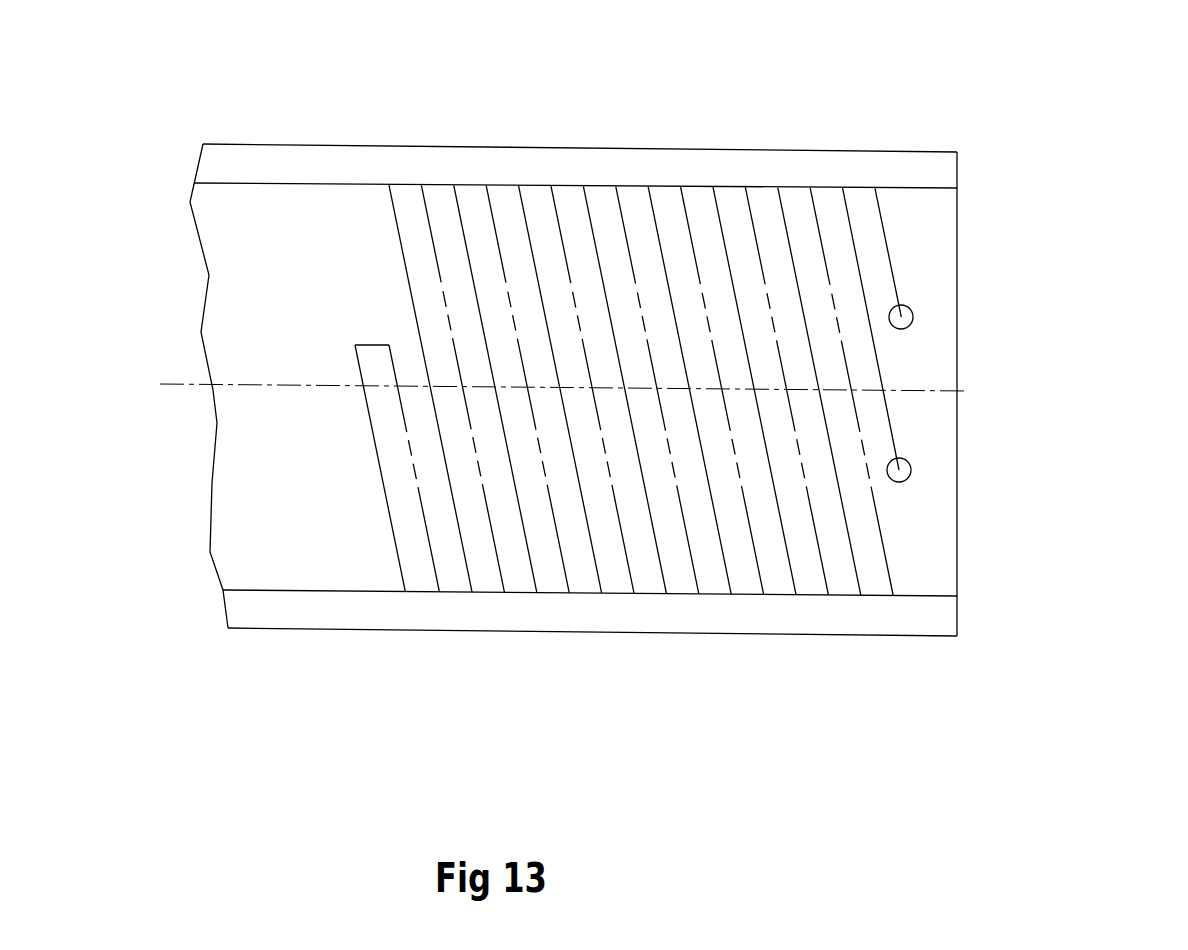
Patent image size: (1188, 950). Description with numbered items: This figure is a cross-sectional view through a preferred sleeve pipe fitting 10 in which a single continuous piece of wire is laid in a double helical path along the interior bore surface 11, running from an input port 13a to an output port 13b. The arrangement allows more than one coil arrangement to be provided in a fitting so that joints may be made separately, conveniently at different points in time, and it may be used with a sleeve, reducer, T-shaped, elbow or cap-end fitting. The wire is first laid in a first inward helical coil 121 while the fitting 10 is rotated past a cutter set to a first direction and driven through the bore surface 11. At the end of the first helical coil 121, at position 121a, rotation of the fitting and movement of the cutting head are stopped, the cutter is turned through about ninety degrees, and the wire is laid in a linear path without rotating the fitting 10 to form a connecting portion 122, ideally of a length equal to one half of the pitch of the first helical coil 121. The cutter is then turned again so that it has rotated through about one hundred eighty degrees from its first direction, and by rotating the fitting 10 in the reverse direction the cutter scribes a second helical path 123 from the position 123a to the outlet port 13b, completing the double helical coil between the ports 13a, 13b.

The pipe fitting 10 is at (702, 147).
The interior bore surface 11 is at (352, 588).
The first inward helical coil 121 is at (880, 543).
The position at end of first helical coil 121a is at (390, 343).
The connecting portion 122 is at (368, 337).
The second helical path 123 is at (460, 387).
The position at start of second helical path 123a is at (350, 347).
The input port 13a is at (915, 323).
The output port 13b is at (913, 479).